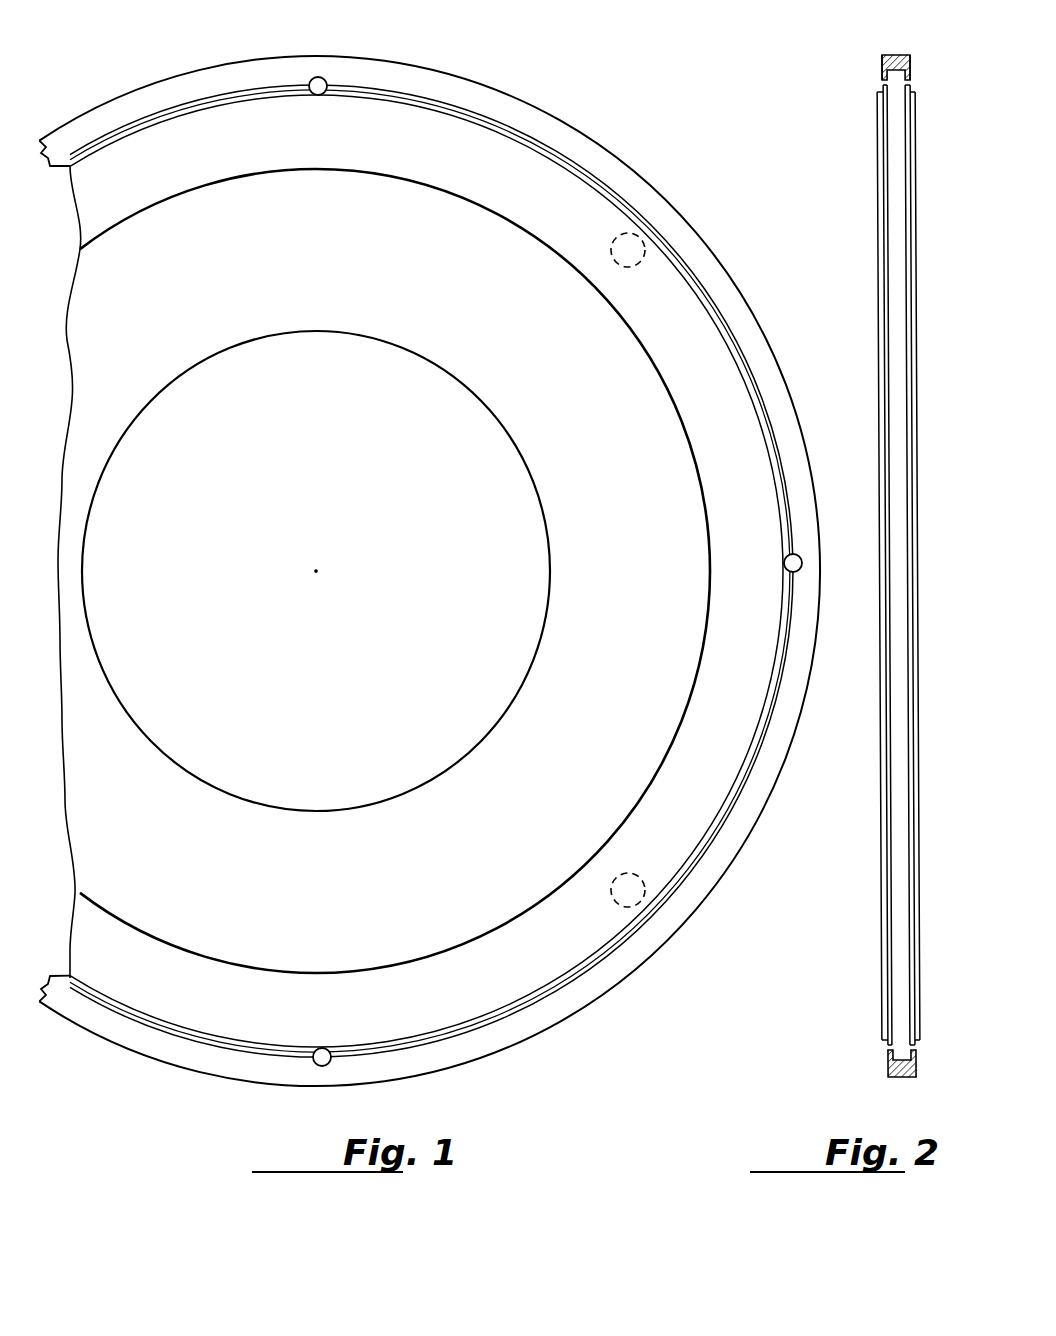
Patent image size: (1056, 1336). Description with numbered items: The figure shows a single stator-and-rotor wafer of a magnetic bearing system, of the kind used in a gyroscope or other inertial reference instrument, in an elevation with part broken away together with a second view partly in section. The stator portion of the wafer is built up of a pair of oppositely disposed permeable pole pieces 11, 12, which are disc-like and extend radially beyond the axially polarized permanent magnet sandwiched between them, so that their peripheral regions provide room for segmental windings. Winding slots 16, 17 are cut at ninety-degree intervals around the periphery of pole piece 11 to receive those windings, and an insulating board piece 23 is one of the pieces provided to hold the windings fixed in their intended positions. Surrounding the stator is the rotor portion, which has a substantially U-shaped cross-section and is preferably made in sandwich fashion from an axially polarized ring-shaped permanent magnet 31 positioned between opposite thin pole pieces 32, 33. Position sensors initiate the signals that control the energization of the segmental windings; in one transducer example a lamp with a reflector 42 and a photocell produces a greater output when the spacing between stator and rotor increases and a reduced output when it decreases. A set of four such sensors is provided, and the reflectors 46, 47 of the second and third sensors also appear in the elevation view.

In FIG. 1, the pole piece 11 is at (536, 489).
In FIG. 2, the pole piece 11 is at (893, 888).
In FIG. 2, the pole piece 12 is at (912, 882).
In FIG. 1, the winding slot 16 is at (610, 250).
In FIG. 1, the winding slot 17 is at (622, 873).
In FIG. 1, the insulating board piece 23 is at (693, 332).
In FIG. 2, the permanent magnet 31 is at (893, 57).
In FIG. 1, the pole piece 32 is at (410, 78).
In FIG. 2, the pole piece 32 is at (882, 65).
In FIG. 2, the pole piece 33 is at (910, 65).
In FIG. 1, the reflector 42 is at (318, 95).
In FIG. 1, the reflector 46 is at (784, 564).
In FIG. 1, the reflector 47 is at (324, 1048).